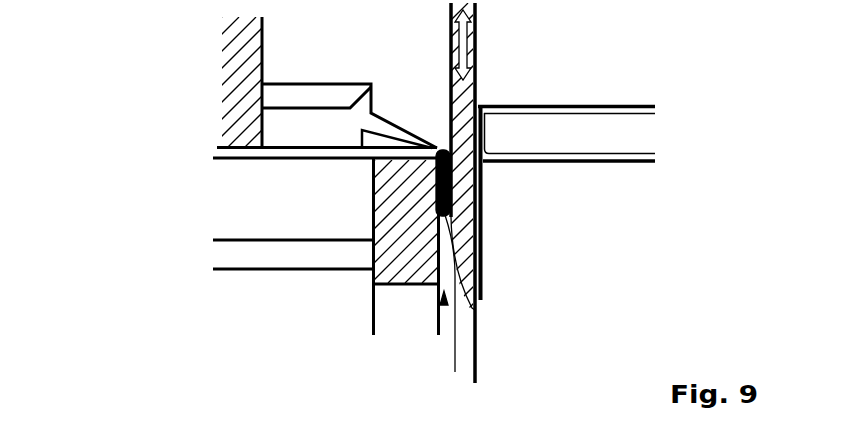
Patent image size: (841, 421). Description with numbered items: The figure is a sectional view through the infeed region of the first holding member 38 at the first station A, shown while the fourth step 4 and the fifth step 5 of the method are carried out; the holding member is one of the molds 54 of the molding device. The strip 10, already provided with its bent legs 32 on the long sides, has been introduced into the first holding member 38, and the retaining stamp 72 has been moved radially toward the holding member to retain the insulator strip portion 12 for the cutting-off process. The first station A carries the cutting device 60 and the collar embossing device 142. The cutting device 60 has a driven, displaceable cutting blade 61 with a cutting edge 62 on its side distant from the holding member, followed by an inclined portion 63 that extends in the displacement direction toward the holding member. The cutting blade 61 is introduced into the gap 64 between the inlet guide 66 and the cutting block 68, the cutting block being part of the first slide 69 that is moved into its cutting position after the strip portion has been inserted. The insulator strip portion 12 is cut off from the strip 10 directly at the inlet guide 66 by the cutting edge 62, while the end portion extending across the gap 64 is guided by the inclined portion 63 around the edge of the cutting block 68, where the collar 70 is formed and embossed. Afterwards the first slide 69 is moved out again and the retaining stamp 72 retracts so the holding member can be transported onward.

The insulator strip portion 12 is at (283, 140).
The retaining stamp 72 is at (230, 124).
The leg 32 is at (297, 97).
The fourth step 4 is at (414, 29).
The cutting blade 61 is at (473, 75).
The cutting edge 62 is at (477, 323).
The fifth step 5 is at (472, 236).
The first station A is at (660, 60).
The first holding member 38 is at (222, 188).
The mold 54 is at (242, 200).
The first slide 69 is at (372, 213).
The cutting block 68 is at (433, 207).
The collar 70 is at (413, 270).
The collar embossing device 142 is at (372, 302).
The gap 64 is at (437, 298).
The inclined portion 63 is at (448, 310).
The inlet guide 66 is at (567, 163).
The strip 10 is at (608, 162).
The cutting device 60 is at (200, 358).